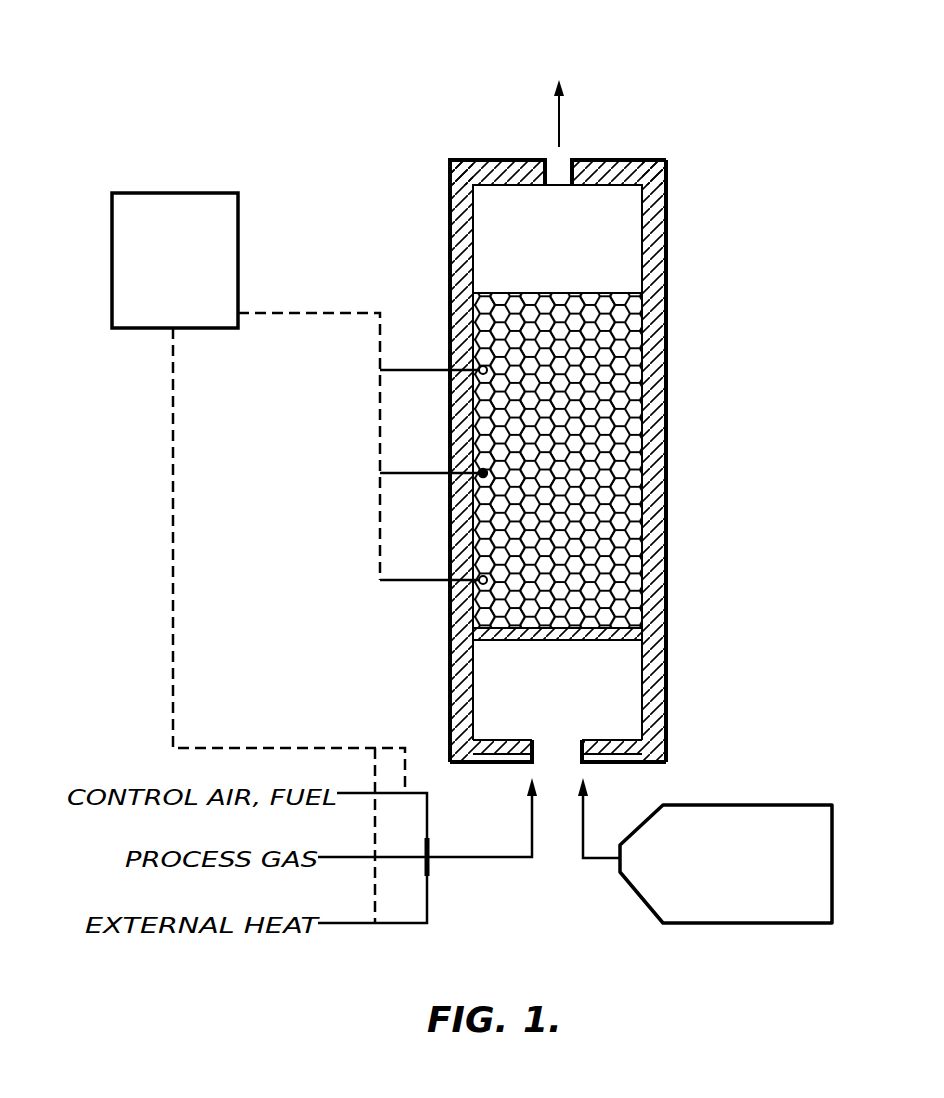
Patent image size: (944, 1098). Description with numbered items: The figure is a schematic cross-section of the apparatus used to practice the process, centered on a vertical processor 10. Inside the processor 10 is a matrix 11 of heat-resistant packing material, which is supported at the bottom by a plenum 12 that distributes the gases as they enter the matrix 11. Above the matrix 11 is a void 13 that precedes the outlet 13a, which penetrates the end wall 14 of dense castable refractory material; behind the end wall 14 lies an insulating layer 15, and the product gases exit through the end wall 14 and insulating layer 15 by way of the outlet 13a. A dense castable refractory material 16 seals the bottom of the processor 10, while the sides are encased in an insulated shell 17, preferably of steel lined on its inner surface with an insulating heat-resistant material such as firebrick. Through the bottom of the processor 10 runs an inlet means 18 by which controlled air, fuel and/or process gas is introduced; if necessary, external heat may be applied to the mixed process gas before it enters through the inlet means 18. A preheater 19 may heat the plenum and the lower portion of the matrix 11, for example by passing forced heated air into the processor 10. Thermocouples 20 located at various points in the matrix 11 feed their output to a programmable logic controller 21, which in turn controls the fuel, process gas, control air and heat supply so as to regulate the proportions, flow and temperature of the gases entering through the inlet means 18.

The processor 10 is at (724, 49).
The matrix 11 is at (623, 413).
The plenum 12 is at (640, 632).
The void 13 is at (617, 238).
The outlet 13a is at (567, 173).
The end wall 14 is at (613, 187).
The insulating layer 15 is at (613, 165).
The dense castable refractory material 16 is at (613, 763).
The insulated shell 17 is at (667, 532).
The inlet means 18 is at (533, 850).
The preheater 19 is at (770, 805).
The thermocouples 20 is at (398, 372).
The programmable logic controller 21 is at (213, 193).